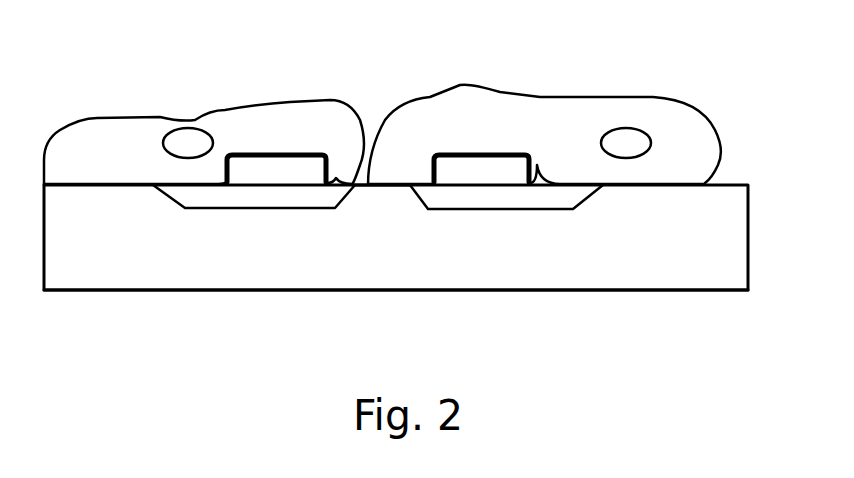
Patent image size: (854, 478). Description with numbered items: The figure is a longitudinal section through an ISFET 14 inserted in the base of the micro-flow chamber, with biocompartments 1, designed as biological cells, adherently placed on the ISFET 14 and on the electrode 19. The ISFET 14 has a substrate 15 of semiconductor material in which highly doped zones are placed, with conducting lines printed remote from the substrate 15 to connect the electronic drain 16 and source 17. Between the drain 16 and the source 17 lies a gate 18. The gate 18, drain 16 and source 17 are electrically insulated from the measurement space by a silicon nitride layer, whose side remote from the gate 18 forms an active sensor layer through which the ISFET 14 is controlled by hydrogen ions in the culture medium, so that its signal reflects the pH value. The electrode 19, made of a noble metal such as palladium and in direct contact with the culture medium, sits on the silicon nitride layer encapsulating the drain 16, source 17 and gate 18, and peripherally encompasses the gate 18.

The biocompartment 1 is at (118, 140).
The ISFET 14 is at (298, 278).
The substrate 15 is at (543, 265).
The drain 16 is at (196, 201).
The source 17 is at (548, 197).
The gate 18 is at (382, 197).
The electrode 19 is at (258, 172).